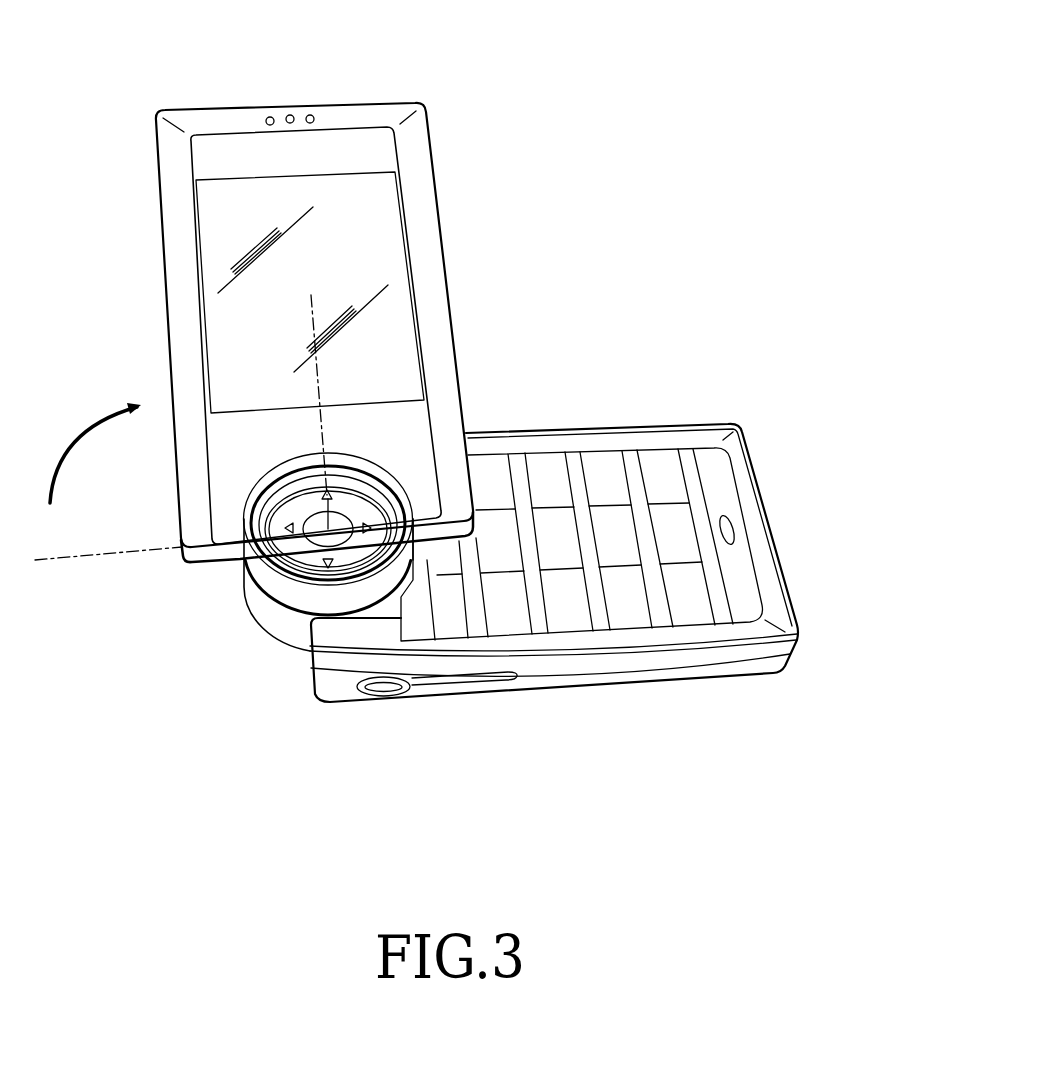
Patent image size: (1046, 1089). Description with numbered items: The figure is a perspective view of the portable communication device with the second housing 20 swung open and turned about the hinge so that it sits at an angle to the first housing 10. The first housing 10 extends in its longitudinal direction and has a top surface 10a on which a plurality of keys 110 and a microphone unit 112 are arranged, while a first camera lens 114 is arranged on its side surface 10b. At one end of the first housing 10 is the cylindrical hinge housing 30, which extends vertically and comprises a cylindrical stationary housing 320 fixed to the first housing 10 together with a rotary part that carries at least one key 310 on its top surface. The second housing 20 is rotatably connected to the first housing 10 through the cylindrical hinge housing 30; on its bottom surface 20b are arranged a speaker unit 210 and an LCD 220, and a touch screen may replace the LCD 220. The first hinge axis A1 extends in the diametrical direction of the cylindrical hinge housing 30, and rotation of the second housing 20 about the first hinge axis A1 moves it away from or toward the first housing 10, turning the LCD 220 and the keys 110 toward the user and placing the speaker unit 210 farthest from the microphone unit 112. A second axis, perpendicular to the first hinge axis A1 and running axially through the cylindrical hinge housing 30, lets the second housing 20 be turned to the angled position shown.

The first housing 10 is at (797, 550).
The top surface of the first housing 10a is at (775, 603).
The side surface of the first housing 10b is at (628, 663).
The keys 110 is at (658, 465).
The microphone unit 112 is at (727, 528).
The first camera lens 114 is at (383, 688).
The second housing 20 is at (462, 243).
The bottom surface of the second housing 20b is at (418, 165).
The speaker unit 210 is at (290, 111).
The LCD 220 is at (228, 240).
The cylindrical hinge housing 30 is at (243, 593).
The key 310 is at (328, 525).
The cylindrical stationary housing 320 is at (277, 583).
The first hinge axis A1 is at (106, 553).